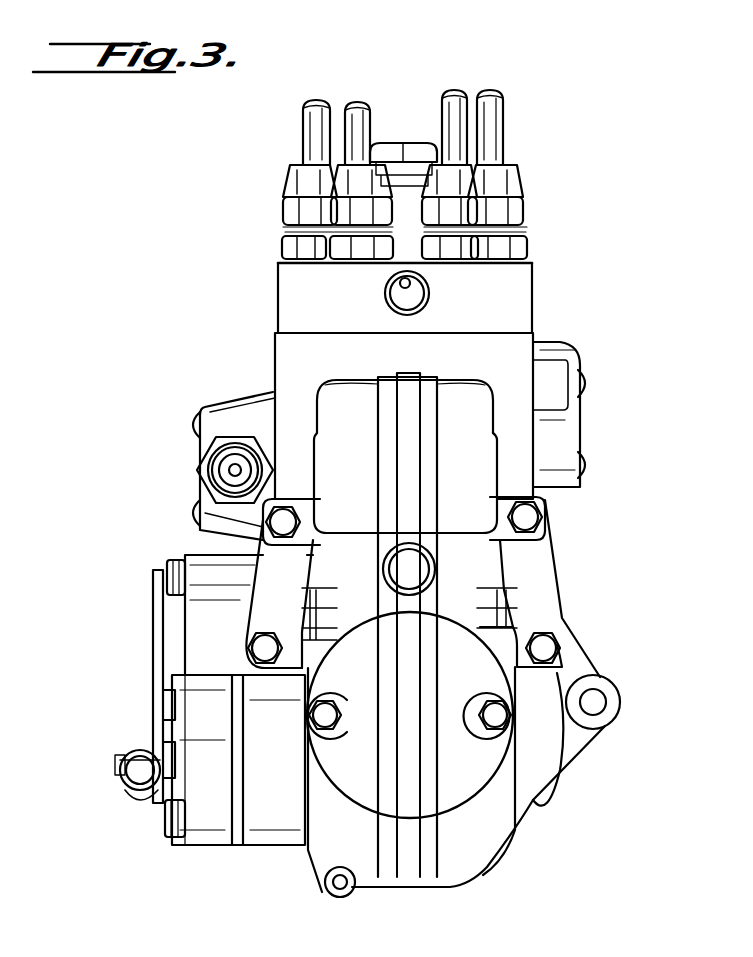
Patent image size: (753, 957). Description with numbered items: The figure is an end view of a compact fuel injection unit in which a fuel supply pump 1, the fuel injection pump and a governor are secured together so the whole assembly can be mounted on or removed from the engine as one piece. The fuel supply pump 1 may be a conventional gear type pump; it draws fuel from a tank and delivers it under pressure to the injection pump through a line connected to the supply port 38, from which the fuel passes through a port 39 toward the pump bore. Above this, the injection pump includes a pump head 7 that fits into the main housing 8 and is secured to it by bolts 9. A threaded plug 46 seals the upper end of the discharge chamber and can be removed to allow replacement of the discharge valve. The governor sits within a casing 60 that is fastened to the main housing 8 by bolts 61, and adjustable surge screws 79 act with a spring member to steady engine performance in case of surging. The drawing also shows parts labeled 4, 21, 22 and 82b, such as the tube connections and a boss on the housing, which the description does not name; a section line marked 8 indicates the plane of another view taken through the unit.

The fuel supply pump 1 is at (158, 557).
The mounting bar 4 is at (158, 620).
The pump head 7 is at (513, 278).
The main housing 8 is at (312, 470).
The bolts 9 is at (283, 250).
The coupling nuts 21 is at (352, 178).
The delivery tubes 22 is at (492, 92).
The supply port 38 is at (412, 296).
The port 39 is at (410, 283).
The threaded plug 46 is at (391, 145).
The casing 60 is at (483, 850).
The bolts 61 is at (606, 695).
The adjustable surge screws 79 is at (422, 569).
The control valve boss 82b is at (228, 477).